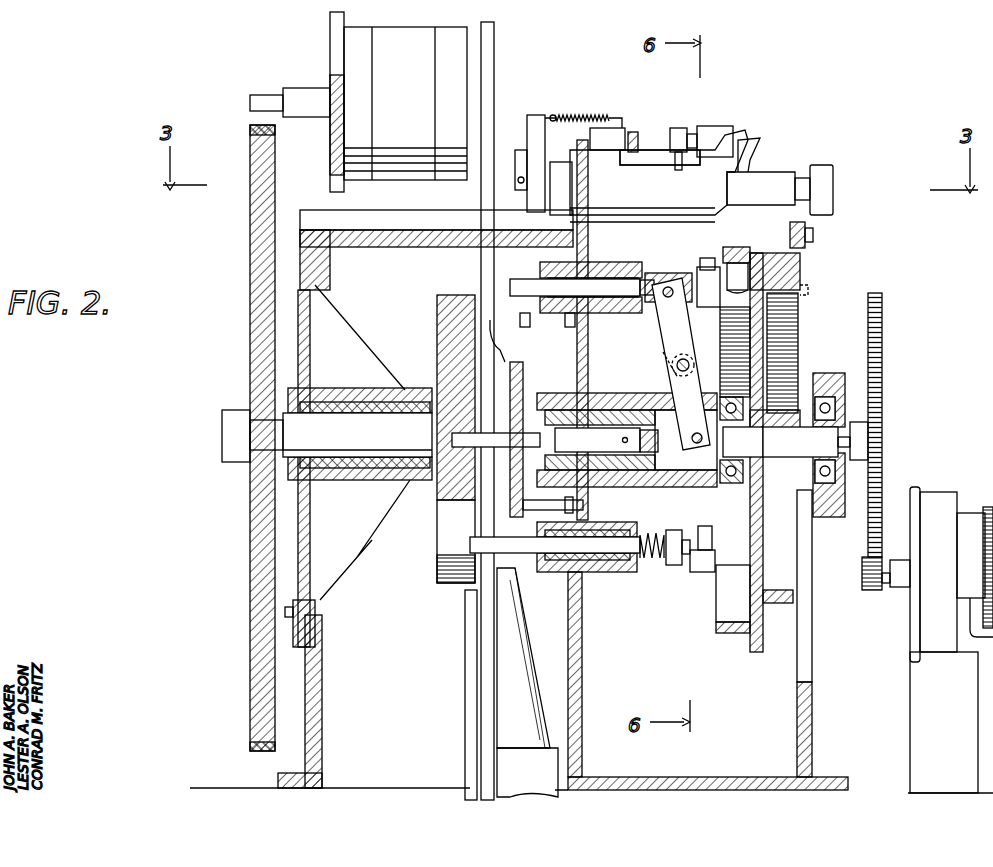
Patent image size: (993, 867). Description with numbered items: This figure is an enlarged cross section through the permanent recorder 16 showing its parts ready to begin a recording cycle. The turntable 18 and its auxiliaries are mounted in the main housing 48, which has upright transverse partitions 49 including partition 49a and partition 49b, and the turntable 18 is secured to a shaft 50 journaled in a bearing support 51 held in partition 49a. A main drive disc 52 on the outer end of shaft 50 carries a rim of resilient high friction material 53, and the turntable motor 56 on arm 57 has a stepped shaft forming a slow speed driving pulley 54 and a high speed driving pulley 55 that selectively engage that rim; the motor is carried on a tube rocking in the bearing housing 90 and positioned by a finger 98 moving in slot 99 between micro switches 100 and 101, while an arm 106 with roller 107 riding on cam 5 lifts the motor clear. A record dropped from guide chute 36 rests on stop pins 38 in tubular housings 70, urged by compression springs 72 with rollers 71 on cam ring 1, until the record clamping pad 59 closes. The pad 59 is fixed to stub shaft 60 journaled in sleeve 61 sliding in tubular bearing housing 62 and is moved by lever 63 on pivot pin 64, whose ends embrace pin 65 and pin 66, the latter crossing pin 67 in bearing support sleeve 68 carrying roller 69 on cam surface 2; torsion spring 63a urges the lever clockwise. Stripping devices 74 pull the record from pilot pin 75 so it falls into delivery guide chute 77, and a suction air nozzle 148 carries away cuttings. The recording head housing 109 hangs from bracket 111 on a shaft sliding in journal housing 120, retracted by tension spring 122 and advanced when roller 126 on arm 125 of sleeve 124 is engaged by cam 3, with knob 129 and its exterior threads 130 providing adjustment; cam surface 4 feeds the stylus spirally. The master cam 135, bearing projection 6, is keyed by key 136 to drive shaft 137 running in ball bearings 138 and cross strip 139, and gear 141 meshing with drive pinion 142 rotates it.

The cam ring 1 is at (706, 574).
The cam surface 2 is at (706, 308).
The cam 3 is at (716, 628).
The cam surface 4 is at (755, 652).
The cam 5 is at (773, 604).
The projection 6 is at (810, 291).
The recorder 16 is at (224, 633).
The turntable 18 is at (428, 588).
The guide chute 36 is at (496, 46).
The stop pin 38 is at (530, 554).
The main housing 48 is at (295, 767).
The column 49 is at (812, 729).
The partition 49a is at (323, 752).
The partition 49b is at (583, 688).
The shaft 50 is at (327, 434).
The bearing support 51 is at (311, 521).
The main drive disc 52 is at (250, 515).
The ring of resilient high friction material 53 is at (250, 750).
The slow speed driving pulley 54 is at (254, 95).
The high speed driving pulley 55 is at (292, 88).
The turntable motor 56 is at (405, 103).
The arm 57 is at (331, 152).
The record clamping pad 59 is at (525, 498).
The stub shaft 60 is at (597, 440).
The sleeve 61 is at (648, 447).
The tubular bearing housing 62 is at (596, 488).
The lever 63 is at (664, 342).
The torsion spring 63a is at (668, 357).
The pivot pin 64 is at (677, 368).
The pin 65 is at (693, 442).
The pin 66 is at (668, 287).
The pin 67 is at (625, 292).
The bearing support sleeve 68 is at (592, 281).
The cam follower roller 69 is at (690, 302).
The tubular housing 70 is at (613, 573).
The cam follower roller 71 is at (693, 568).
The compression spring 72 is at (652, 532).
The record stripping device 74 is at (520, 382).
The pilot pin 75 is at (495, 455).
The record delivery guide chute 77 is at (465, 694).
The bearing housing 90 is at (659, 176).
The finger 98 is at (679, 128).
The slot 99 is at (645, 150).
The micro switch 100 is at (607, 128).
The micro switch 101 is at (712, 127).
The arm 106 is at (813, 233).
The cam follower roller 107 is at (780, 250).
The recording head housing 109 is at (537, 357).
The bracket 111 is at (530, 122).
The journal housing 120 is at (560, 162).
The tension spring 122 is at (574, 113).
The sleeve 124 is at (765, 175).
The arm 125 is at (737, 263).
The cam follower roller 126 is at (740, 273).
The adjustment knob 129 is at (833, 186).
The exterior threads 130 is at (802, 180).
The master cam 135 is at (770, 658).
The key 136 is at (768, 430).
The drive shaft 137 is at (815, 441).
The ball bearing 138 is at (818, 397).
The cross strip 139 is at (818, 375).
The gear 141 is at (883, 366).
The drive pinion 142 is at (870, 592).
The suction air nozzle 148 is at (518, 638).